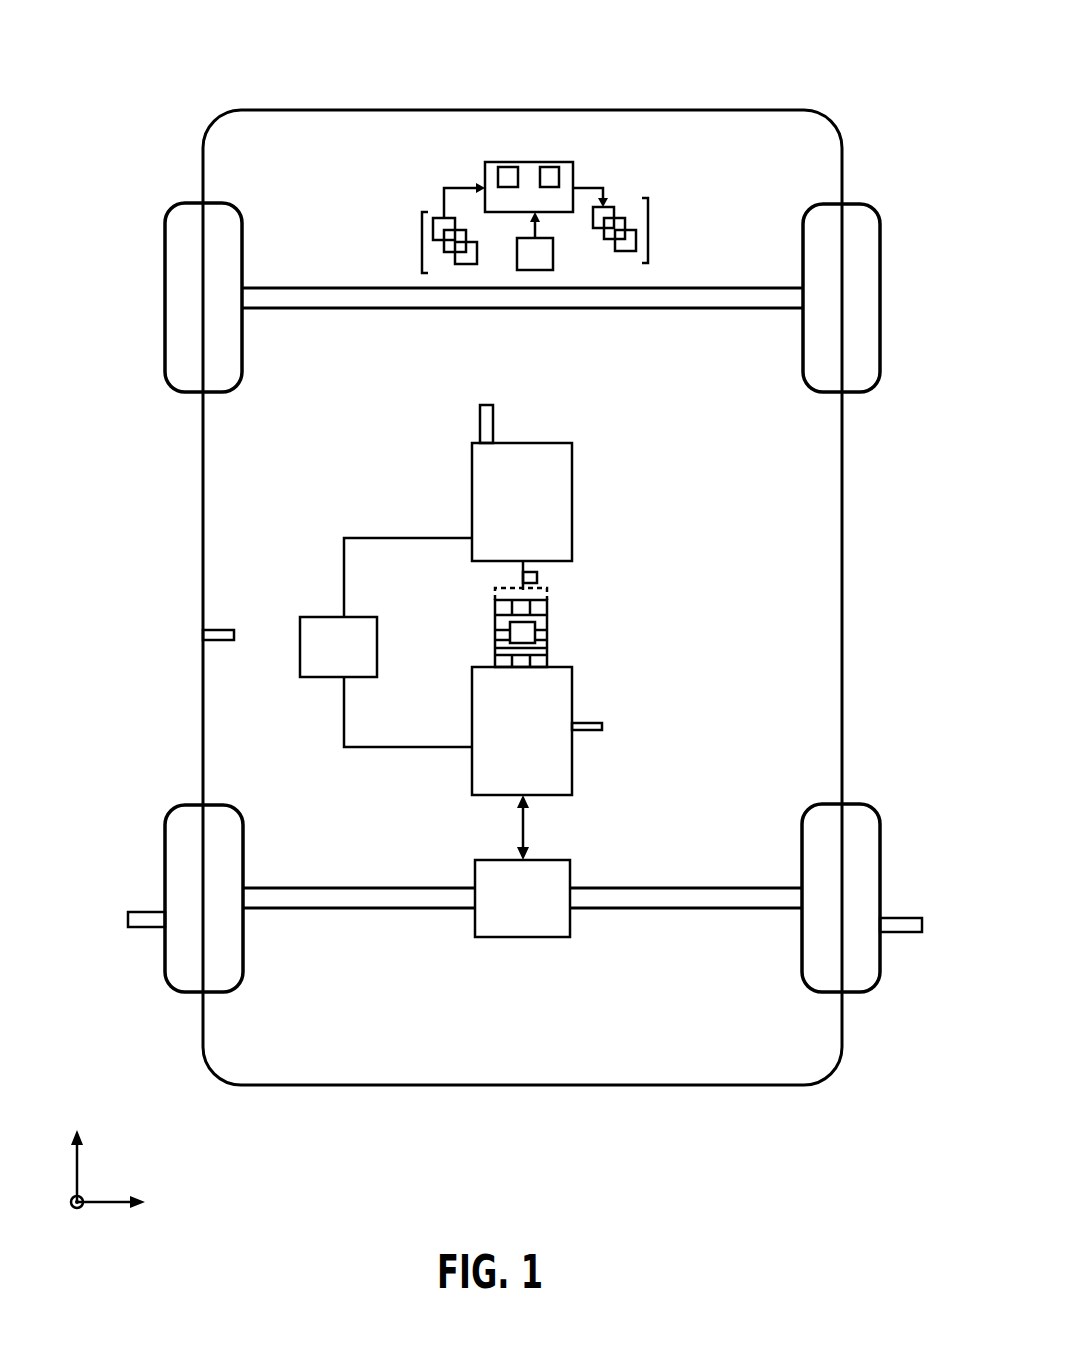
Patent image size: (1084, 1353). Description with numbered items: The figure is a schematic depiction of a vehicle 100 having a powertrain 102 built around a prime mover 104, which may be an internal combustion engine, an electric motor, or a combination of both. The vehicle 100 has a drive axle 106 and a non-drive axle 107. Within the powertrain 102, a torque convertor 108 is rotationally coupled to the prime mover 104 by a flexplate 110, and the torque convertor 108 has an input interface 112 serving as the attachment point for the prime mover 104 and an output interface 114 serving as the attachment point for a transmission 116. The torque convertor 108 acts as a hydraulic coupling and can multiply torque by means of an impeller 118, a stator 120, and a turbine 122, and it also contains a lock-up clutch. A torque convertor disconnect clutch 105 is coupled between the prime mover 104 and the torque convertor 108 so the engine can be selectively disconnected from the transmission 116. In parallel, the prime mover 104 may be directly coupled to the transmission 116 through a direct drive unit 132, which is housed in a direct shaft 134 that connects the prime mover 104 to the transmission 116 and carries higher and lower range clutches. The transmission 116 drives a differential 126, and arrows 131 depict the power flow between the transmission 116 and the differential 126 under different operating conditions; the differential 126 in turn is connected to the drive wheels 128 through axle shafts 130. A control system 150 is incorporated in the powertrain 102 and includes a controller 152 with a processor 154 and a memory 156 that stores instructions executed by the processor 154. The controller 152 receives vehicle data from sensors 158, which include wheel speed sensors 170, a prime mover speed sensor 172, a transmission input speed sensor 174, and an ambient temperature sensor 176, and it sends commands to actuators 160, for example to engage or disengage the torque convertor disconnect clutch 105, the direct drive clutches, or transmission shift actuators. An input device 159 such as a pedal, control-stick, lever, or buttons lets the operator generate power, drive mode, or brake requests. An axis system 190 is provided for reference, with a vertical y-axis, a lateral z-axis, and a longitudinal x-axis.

The vehicle 100 is at (864, 66).
The powertrain 102 is at (548, 571).
The prime mover 104 is at (572, 487).
The torque convertor disconnect clutch 105 is at (538, 577).
The drive axle 106 is at (533, 913).
The non-drive axle 107 is at (326, 324).
The torque convertor 108 is at (609, 641).
The flexplate 110 is at (547, 590).
The input interface 112 is at (495, 607).
The output interface 114 is at (495, 658).
The transmission 116 is at (574, 708).
The impeller 118 is at (547, 622).
The stator 120 is at (547, 628).
The turbine 122 is at (547, 642).
The differential 126 is at (527, 937).
The drive wheels 128 is at (163, 975).
The axle shafts 130 is at (348, 908).
The arrows 131 is at (522, 830).
The direct drive unit 132 is at (386, 682).
The direct shaft 134 is at (344, 562).
The control system 150 is at (514, 203).
The controller 152 is at (530, 162).
The processor 154 is at (496, 167).
The memory 156 is at (562, 167).
The sensors 158 is at (422, 243).
The input device 159 is at (553, 262).
The actuators 160 is at (648, 231).
The wheel speed sensors 170 is at (898, 918).
The prime mover speed sensor 172 is at (487, 405).
The transmission input speed sensor 174 is at (598, 731).
The ambient temperature sensor 176 is at (216, 630).
The axis system 190 is at (136, 1140).